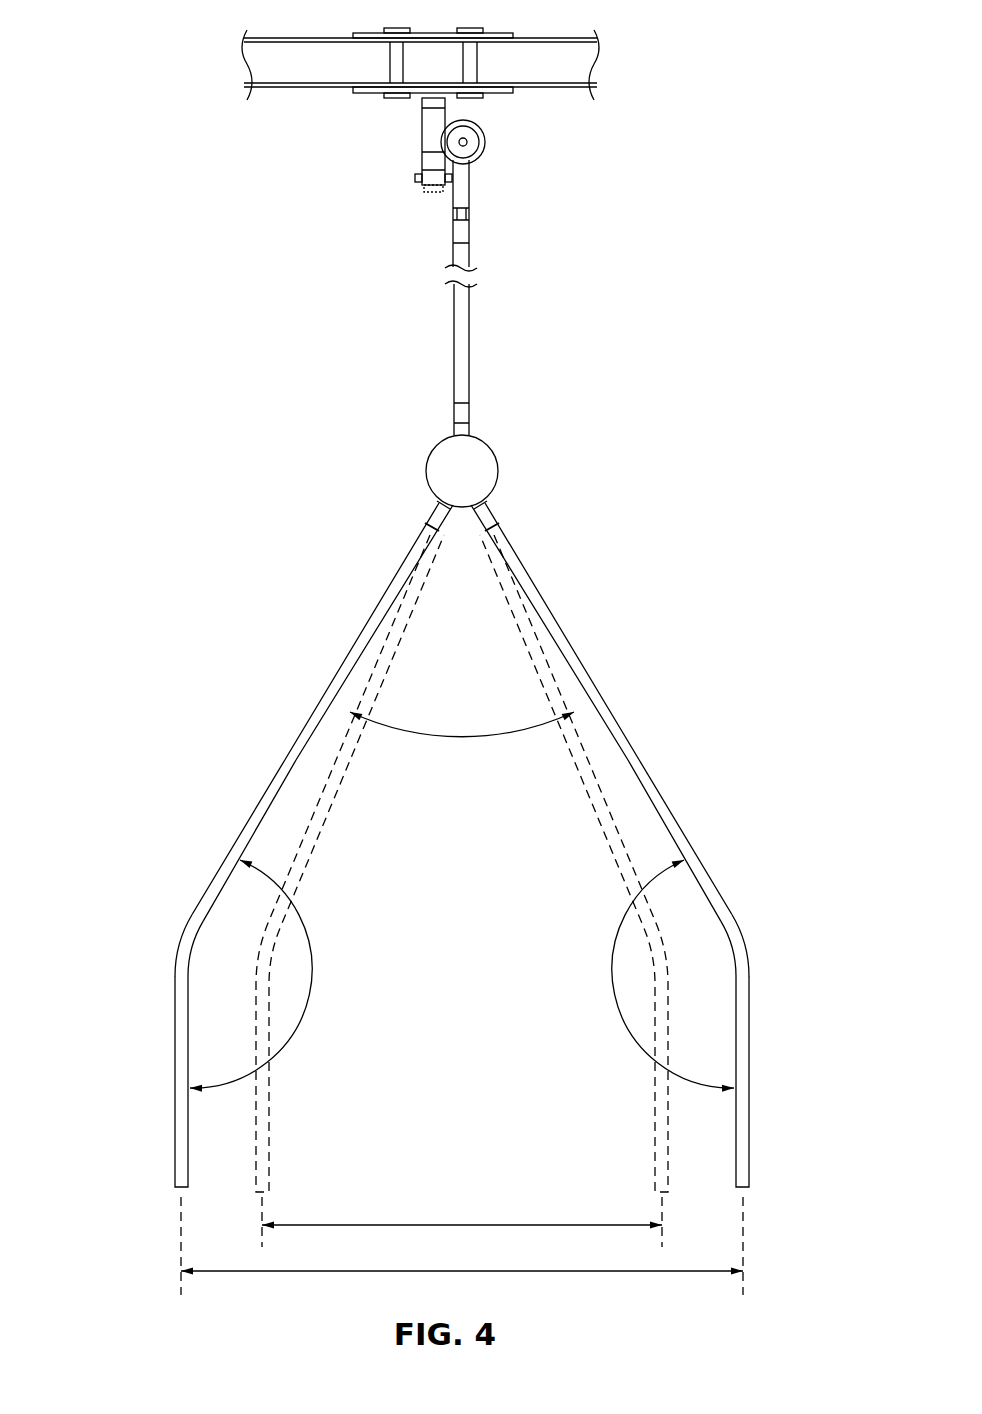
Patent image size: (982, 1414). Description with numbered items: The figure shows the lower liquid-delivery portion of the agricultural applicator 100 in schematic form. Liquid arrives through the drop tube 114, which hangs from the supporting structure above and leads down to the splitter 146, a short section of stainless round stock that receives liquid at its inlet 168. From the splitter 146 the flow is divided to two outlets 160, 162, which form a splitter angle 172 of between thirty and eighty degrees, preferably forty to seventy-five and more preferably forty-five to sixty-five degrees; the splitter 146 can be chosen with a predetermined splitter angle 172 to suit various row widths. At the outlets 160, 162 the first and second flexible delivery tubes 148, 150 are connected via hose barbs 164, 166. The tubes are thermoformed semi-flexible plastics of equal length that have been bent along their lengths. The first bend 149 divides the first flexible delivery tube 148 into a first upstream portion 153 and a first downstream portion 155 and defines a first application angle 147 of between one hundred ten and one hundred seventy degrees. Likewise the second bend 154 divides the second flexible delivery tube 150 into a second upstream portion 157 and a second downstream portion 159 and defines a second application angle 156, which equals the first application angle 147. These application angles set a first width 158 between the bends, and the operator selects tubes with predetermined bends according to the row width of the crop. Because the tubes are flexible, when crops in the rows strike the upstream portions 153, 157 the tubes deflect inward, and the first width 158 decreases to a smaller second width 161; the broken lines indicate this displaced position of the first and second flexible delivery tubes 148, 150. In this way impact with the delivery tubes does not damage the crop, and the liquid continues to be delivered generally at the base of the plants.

The agricultural applicator 100 is at (722, 33).
The drop tube 114 is at (550, 143).
The inlet 168 is at (464, 430).
The splitter 146 is at (483, 469).
The outlet 160 is at (438, 503).
The outlet 162 is at (486, 503).
The hose barb 166 is at (428, 524).
The hose barb 164 is at (496, 524).
The first upstream portion 153 is at (345, 658).
The second flexible delivery tube 150 is at (579, 658).
The first flexible delivery tube 148 is at (250, 820).
The second upstream portion 157 is at (674, 820).
The first bend 149 is at (180, 955).
The second arm bend 154 is at (744, 955).
The first downstream portion 155 is at (175, 1067).
The second downstream portion 159 is at (749, 1067).
The first application angle 147 is at (308, 927).
The second application angle 156 is at (617, 927).
The splitter angle 172 is at (410, 742).
The second width 161 is at (452, 1225).
The first width 158 is at (590, 1271).